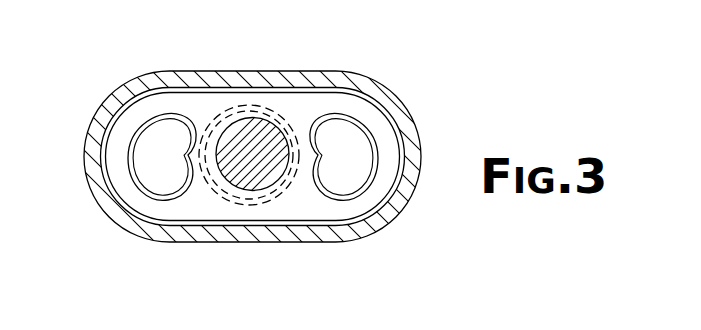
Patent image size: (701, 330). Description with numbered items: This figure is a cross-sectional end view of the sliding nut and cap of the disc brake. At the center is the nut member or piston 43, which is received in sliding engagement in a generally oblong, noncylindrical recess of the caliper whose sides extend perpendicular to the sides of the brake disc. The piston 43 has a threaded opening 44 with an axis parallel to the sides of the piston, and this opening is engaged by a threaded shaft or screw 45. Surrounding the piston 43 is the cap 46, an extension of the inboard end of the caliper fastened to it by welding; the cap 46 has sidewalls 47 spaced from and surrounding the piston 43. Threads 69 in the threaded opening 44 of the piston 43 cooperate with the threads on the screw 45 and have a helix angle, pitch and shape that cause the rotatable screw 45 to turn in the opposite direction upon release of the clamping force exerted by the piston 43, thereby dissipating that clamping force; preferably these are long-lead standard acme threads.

The cap 46 is at (327, 72).
The sidewalls 47 is at (390, 203).
The piston 43 is at (382, 129).
The screw 45 is at (238, 183).
The threaded opening 44 is at (277, 186).
The threads 69 is at (218, 182).